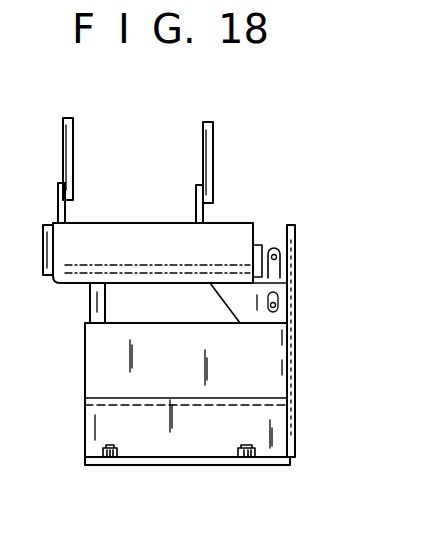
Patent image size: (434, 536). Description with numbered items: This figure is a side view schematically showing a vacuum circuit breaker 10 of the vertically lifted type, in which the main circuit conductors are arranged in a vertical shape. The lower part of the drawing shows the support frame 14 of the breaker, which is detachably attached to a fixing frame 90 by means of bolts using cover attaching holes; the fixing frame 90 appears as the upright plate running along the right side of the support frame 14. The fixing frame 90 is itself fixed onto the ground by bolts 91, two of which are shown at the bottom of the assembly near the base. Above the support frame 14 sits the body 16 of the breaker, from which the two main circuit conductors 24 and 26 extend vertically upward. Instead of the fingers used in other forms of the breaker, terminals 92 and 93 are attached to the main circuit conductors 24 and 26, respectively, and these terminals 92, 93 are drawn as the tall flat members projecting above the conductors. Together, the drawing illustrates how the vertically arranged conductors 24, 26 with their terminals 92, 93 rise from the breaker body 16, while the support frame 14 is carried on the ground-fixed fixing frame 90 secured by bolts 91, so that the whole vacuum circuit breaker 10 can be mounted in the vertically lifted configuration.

The vacuum circuit breaker 10 is at (178, 363).
The support frame 14 is at (278, 370).
The cover body 16 is at (250, 219).
The main circuit conductor 24 is at (66, 213).
The main circuit conductor 26 is at (196, 213).
The fixing frame 90 is at (278, 435).
The bolt 91 is at (117, 454).
The terminal 92 is at (74, 150).
The terminal 93 is at (214, 152).